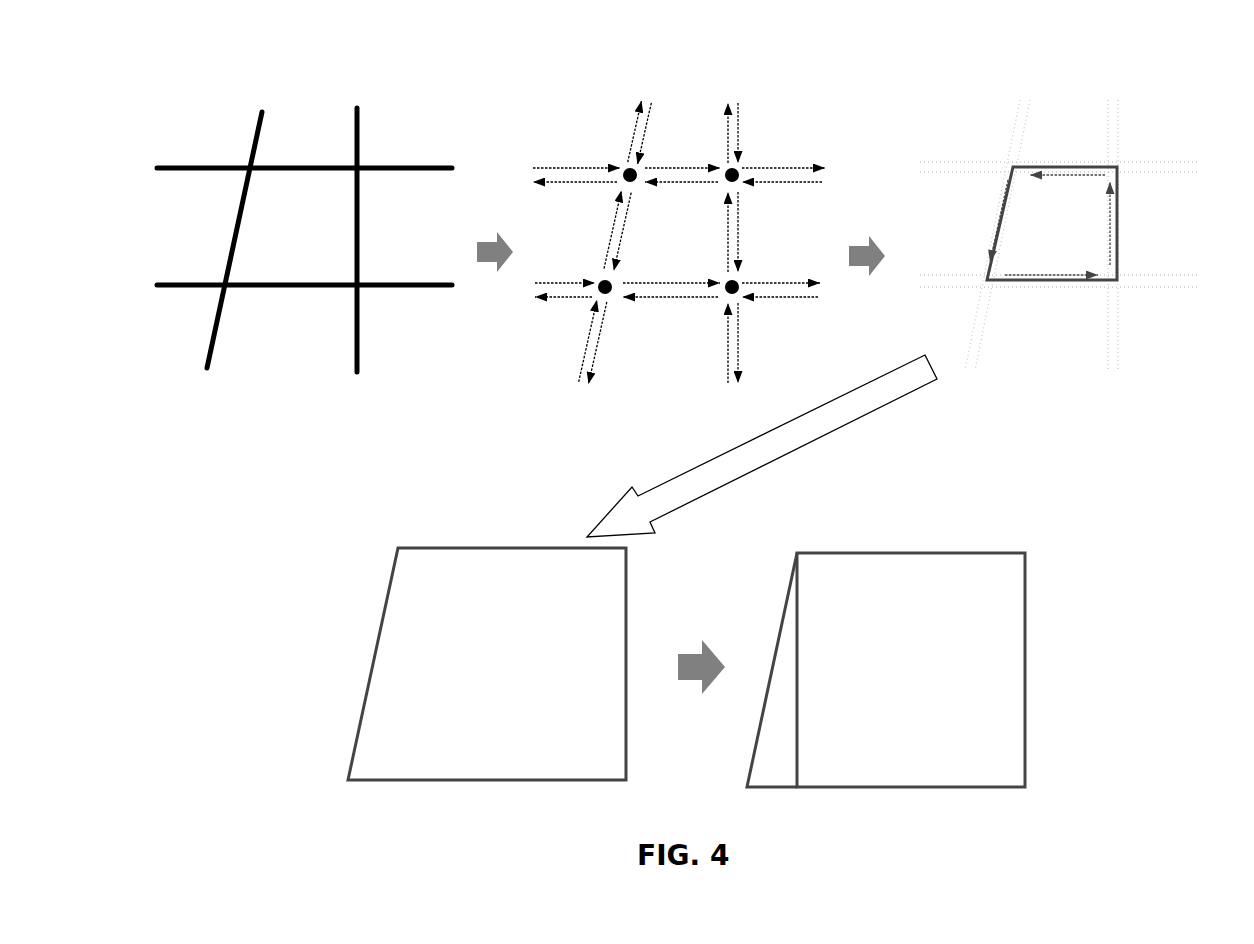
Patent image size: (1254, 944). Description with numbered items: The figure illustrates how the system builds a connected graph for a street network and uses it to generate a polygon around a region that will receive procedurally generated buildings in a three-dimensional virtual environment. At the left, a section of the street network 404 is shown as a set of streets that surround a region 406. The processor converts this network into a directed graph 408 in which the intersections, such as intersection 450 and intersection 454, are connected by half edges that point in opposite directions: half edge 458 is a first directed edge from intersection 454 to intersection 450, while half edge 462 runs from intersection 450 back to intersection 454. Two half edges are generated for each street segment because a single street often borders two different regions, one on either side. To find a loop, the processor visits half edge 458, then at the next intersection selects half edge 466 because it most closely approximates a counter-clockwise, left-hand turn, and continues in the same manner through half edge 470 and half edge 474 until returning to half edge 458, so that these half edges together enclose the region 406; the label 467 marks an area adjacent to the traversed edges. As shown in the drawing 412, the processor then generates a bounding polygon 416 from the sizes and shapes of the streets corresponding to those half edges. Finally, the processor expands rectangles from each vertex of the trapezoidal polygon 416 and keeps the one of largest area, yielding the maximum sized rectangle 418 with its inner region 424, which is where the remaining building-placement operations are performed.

The street network 404 is at (240, 103).
The region 406 is at (677, 436).
The directed graph 408 is at (596, 100).
The drawing 412 is at (977, 112).
The bounding polygon 416 is at (1030, 286).
The maximum sized rectangle 418 is at (895, 552).
The inner region 424 is at (906, 660).
The intersection 450 is at (739, 170).
The intersection 454 is at (738, 281).
The half edge 458 is at (727, 223).
The half edge 462 is at (741, 233).
The half edge 466 is at (668, 183).
The region 467 is at (566, 217).
The half edge 470 is at (621, 230).
The half edge 474 is at (655, 281).